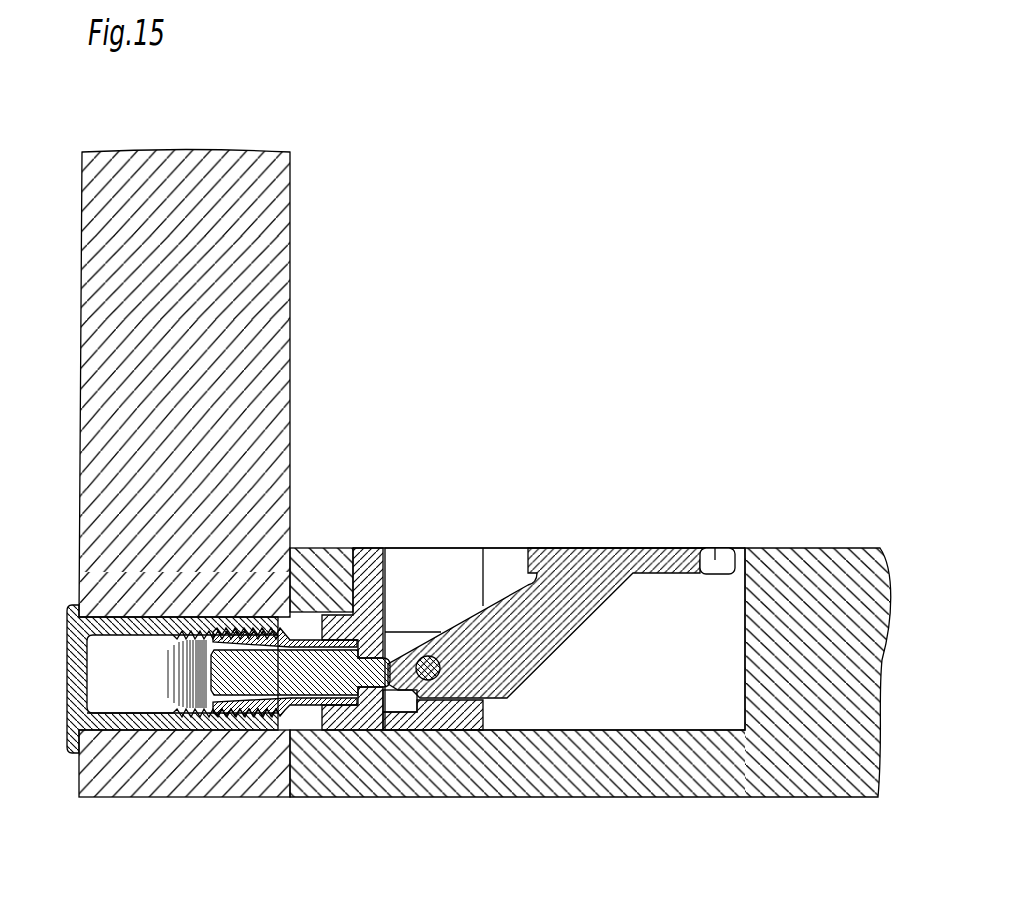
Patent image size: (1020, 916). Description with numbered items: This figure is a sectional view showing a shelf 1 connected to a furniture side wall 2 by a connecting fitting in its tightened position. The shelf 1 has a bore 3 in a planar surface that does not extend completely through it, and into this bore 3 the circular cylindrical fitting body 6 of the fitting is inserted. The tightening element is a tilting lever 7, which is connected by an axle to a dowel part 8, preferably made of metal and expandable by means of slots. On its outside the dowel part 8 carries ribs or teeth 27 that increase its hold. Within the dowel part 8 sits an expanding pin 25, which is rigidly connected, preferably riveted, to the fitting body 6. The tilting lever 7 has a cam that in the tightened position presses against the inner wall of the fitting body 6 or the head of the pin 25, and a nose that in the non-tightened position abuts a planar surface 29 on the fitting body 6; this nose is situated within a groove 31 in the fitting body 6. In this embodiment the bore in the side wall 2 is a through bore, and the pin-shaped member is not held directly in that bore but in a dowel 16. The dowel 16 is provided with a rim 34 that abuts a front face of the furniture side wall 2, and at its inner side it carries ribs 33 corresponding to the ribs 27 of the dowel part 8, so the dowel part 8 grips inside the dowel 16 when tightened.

The shelf 1 is at (843, 545).
The furniture side wall 2 is at (247, 203).
The bore 3 is at (678, 625).
The fitting body 6 is at (428, 596).
The tilting lever 7 is at (602, 583).
The dowel part 8 is at (325, 617).
The dowel 16 is at (158, 720).
The expanding pin 25 is at (305, 672).
The ribs or teeth 27 is at (294, 623).
The planar surface 29 is at (420, 703).
The groove 31 is at (387, 712).
The ribs 33 is at (207, 718).
The rim 34 is at (72, 605).